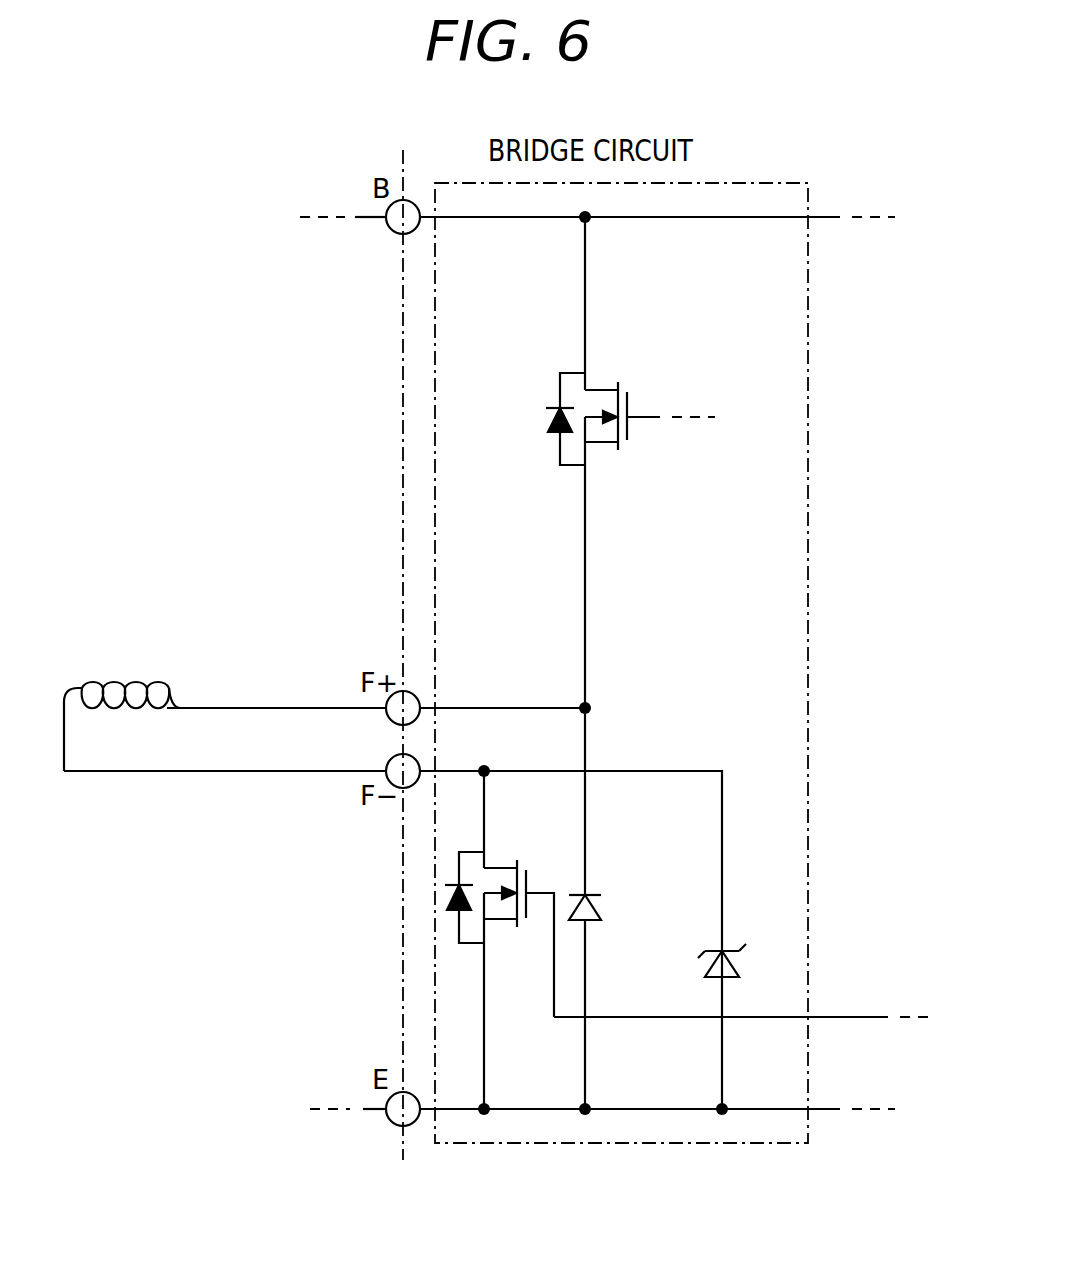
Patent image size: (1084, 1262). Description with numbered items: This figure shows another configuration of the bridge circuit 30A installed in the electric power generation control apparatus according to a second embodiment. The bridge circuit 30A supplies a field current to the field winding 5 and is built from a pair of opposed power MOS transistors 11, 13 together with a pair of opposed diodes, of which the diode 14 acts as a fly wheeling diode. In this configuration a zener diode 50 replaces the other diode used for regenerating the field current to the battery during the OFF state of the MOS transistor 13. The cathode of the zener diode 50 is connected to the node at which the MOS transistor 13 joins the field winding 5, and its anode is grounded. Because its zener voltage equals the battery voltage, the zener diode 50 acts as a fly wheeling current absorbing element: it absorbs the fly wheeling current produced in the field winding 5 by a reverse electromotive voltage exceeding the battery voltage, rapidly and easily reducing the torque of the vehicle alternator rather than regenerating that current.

The field winding 5 is at (112, 686).
The MOS transistor 11 is at (598, 390).
The MOS transistor 13 is at (497, 868).
The diode 14 is at (598, 894).
The zener diode 50 is at (733, 950).
The bridge circuit 30A is at (773, 183).